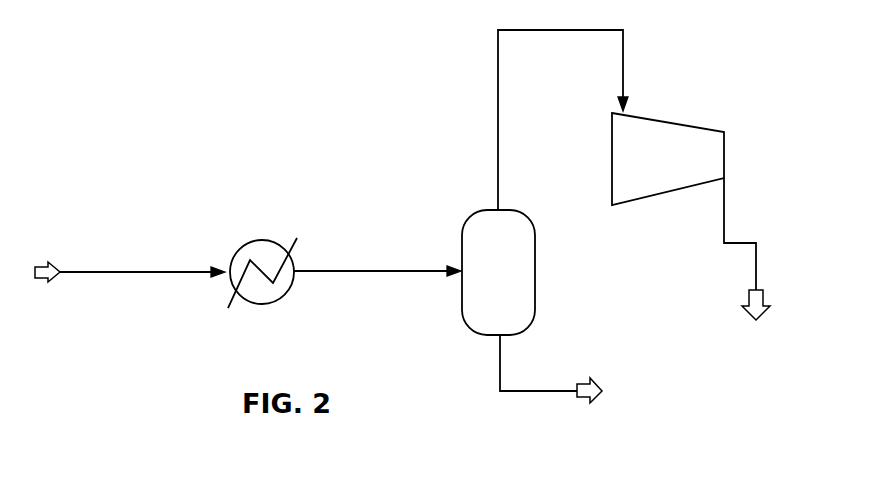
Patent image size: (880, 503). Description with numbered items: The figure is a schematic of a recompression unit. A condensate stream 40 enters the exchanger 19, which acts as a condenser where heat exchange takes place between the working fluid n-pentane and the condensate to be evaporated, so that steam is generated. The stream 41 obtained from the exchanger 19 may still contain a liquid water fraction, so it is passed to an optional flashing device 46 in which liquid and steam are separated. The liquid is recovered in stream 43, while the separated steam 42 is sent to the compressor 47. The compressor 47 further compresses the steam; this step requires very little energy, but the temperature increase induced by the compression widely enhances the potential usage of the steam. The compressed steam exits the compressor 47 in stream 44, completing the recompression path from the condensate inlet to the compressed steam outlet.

The condensate stream 40 is at (110, 272).
The exchanger 19 is at (255, 237).
The stream obtained from the exchanger 41 is at (343, 270).
The flashing device 46 is at (523, 281).
The steam 42 is at (497, 72).
The compressor 47 is at (641, 131).
The compressed steam stream 44 is at (757, 270).
The liquid stream 43 is at (515, 394).